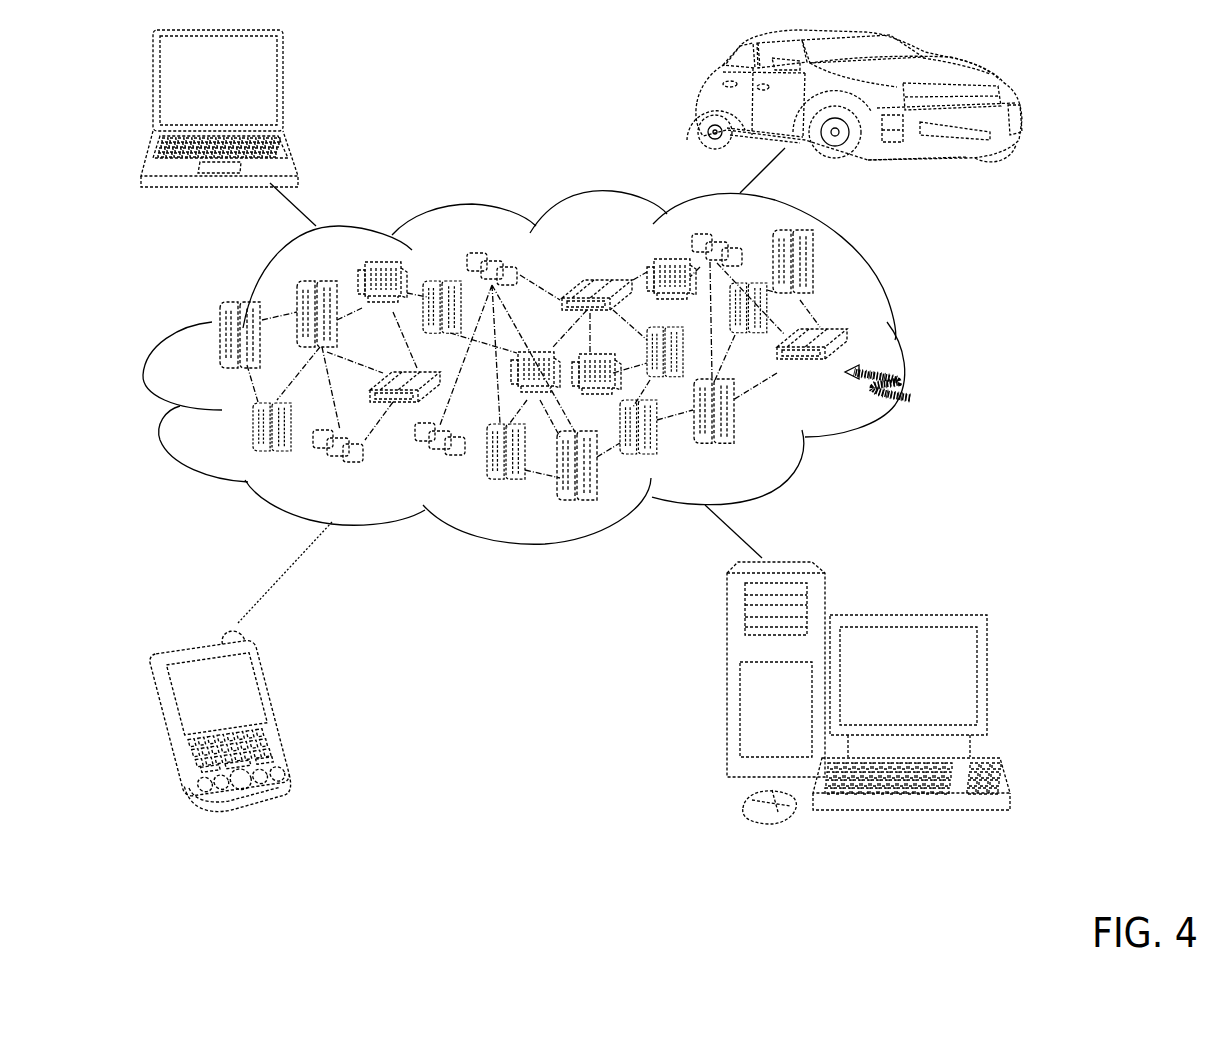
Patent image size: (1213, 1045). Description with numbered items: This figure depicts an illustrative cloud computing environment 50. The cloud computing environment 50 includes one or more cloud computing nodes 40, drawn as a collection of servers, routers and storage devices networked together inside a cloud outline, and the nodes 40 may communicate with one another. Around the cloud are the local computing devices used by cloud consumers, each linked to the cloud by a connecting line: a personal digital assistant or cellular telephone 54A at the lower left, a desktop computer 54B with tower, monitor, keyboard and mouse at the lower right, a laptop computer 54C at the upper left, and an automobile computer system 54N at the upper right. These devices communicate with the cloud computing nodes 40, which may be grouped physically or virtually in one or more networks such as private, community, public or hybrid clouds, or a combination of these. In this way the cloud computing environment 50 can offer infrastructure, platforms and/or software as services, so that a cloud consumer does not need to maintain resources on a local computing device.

The laptop computer 54C is at (283, 82).
The automobile computer system 54N is at (697, 100).
The cloud computing environment 50 is at (895, 342).
The cloud computing nodes 40 is at (896, 390).
The personal digital assistant or cellular telephone 54A is at (280, 708).
The desktop computer 54B is at (905, 615).